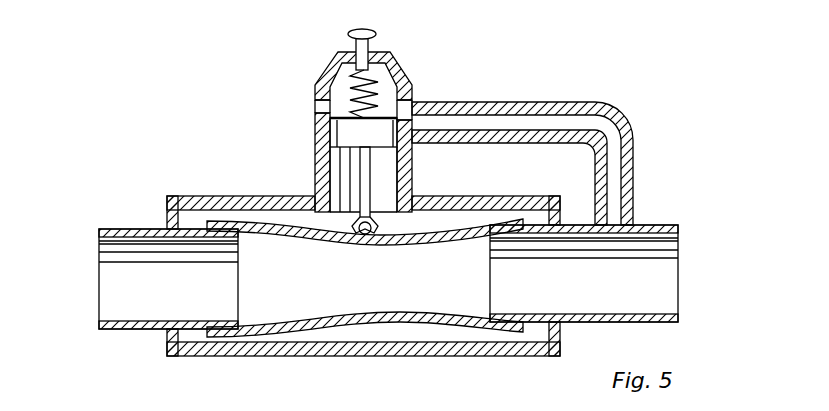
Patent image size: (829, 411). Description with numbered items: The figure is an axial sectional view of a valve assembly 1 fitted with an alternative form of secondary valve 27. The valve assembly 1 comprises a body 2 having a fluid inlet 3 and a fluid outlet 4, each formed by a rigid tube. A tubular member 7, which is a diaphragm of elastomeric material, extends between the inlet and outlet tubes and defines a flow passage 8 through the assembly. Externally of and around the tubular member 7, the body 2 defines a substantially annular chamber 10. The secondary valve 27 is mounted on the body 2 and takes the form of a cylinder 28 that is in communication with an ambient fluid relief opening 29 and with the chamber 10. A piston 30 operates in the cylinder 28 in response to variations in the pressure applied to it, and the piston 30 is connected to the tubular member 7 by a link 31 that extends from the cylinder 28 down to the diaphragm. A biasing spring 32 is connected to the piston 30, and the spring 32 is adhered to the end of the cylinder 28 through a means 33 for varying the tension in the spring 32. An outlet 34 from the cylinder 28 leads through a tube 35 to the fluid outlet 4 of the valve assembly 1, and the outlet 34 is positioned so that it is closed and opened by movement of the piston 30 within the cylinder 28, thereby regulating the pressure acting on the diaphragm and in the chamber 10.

The valve assembly 1 is at (201, 142).
The body 2 is at (215, 357).
The fluid inlet 3 is at (110, 290).
The fluid outlet 4 is at (660, 287).
The tubular member 7 is at (406, 320).
The flow passage 8 is at (283, 300).
The chamber 10 is at (325, 333).
The secondary valve 27 is at (410, 51).
The cylinder 28 is at (413, 172).
The ambient fluid relief opening 29 is at (318, 108).
The piston 30 is at (318, 133).
The link 31 is at (335, 212).
The biasing spring 32 is at (378, 86).
The means for varying the tension in the spring 33 is at (336, 70).
The outlet 34 is at (412, 121).
The tube 35 is at (617, 121).